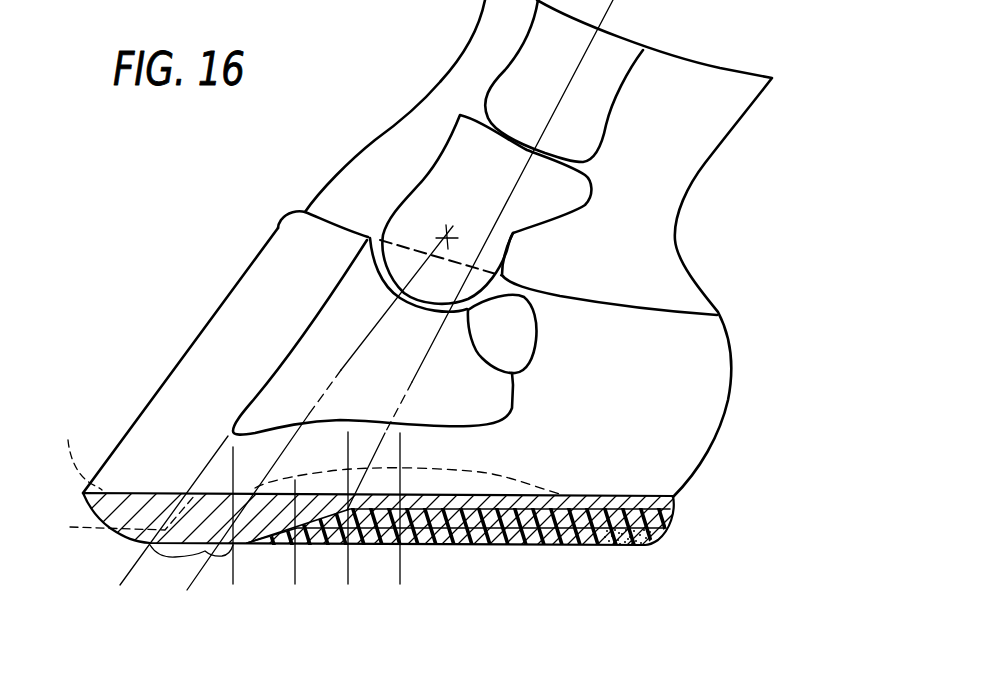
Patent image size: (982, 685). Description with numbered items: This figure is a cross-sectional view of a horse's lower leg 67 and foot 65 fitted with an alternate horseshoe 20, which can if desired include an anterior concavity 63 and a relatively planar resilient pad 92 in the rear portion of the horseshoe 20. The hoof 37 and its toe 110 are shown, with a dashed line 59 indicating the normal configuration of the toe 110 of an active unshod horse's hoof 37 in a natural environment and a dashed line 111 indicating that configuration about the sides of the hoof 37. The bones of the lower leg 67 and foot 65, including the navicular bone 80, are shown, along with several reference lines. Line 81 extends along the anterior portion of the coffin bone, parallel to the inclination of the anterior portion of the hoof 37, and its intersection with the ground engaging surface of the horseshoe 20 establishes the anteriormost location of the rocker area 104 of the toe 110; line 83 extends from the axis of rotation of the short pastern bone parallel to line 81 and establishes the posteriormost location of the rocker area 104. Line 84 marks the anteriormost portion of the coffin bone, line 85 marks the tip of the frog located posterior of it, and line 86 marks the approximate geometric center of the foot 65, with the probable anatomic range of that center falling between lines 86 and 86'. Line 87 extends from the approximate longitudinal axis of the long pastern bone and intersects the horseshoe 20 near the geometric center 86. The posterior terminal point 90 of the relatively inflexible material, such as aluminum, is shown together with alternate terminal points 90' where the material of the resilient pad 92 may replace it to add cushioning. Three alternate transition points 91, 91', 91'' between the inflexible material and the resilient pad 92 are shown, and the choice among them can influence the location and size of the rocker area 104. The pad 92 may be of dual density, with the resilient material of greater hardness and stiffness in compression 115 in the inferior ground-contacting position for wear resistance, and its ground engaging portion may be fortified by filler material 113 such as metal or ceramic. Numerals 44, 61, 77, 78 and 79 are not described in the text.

The horseshoe 20 is at (680, 528).
The hoof 37 is at (162, 380).
The pad body 44 is at (582, 517).
The dashed line 59 is at (80, 452).
The toe edge of pad 61 is at (112, 537).
The anterior concavity 63 is at (112, 516).
The foot 65 is at (218, 307).
The lower leg 67 is at (382, 152).
The long pastern bone 77 is at (527, 69).
The short pastern bone 78 is at (465, 189).
The coffin bone 79 is at (379, 355).
The navicular bone 80 is at (489, 345).
The line 81 is at (159, 523).
The line 83 is at (309, 419).
The line 84 is at (232, 530).
The line 85 is at (284, 538).
The geometric center of the foot 86 is at (345, 522).
The line 86' is at (404, 523).
The line 87 is at (346, 511).
The posterior terminal point 90 is at (503, 498).
The alternate terminal points 90' is at (458, 485).
The transition point 91 is at (276, 593).
The transition point 91' is at (350, 587).
The transition point 91'' is at (440, 590).
The resilient pad 92 is at (647, 545).
The rocker area 104 is at (183, 557).
The toe 110 is at (142, 443).
The dashed line 111 is at (485, 472).
The filler material 113 is at (627, 547).
The resilient material exhibiting greater hardness and stiffness in compression 115 is at (612, 547).